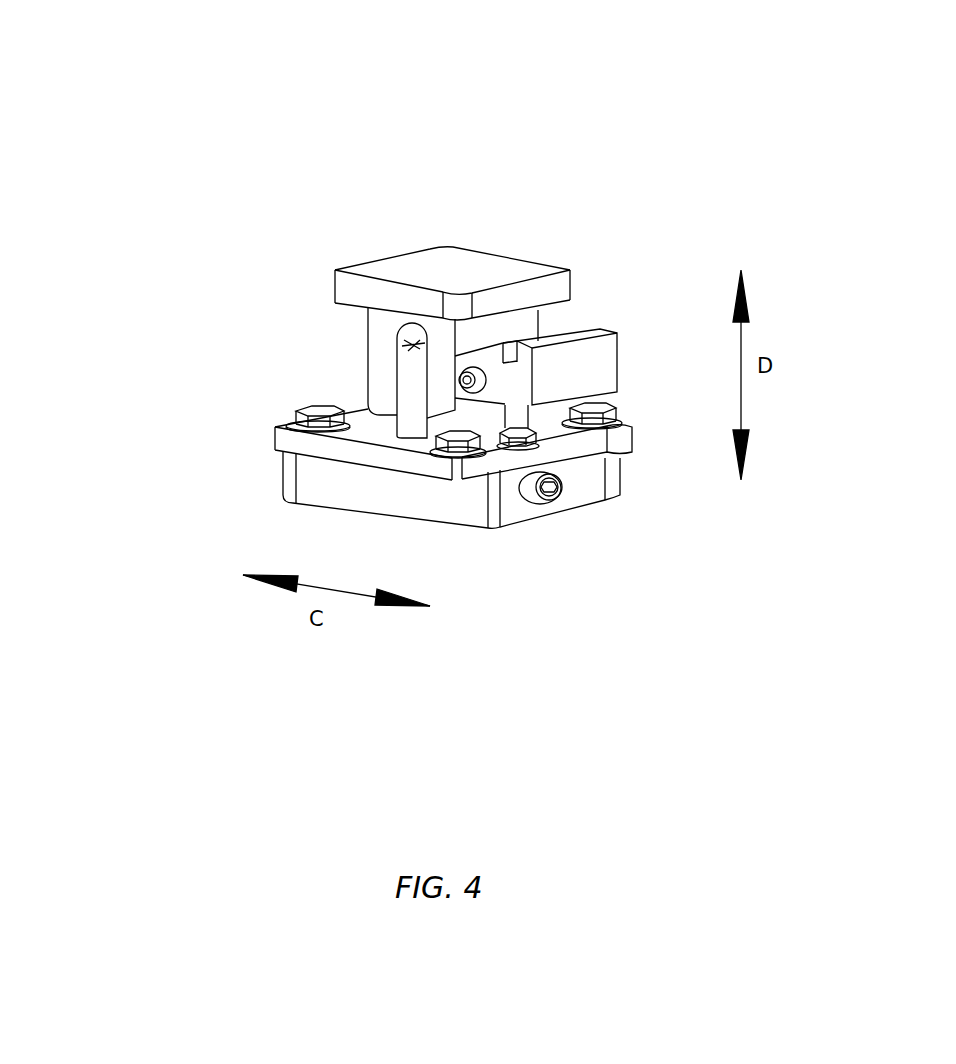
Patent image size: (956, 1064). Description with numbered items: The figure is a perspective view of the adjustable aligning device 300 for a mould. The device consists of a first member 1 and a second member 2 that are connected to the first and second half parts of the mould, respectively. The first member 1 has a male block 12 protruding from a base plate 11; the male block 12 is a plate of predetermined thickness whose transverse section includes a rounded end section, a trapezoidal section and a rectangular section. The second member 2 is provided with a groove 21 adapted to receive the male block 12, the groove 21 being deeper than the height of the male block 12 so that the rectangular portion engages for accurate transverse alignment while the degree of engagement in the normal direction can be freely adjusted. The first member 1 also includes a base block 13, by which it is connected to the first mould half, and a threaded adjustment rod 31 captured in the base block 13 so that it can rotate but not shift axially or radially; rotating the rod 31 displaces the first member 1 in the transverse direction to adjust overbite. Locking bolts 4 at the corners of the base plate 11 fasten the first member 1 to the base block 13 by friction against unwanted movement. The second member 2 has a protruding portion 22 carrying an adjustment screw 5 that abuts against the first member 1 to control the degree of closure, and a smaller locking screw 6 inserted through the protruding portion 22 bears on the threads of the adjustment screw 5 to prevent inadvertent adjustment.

The aligning device 300 is at (648, 127).
The first member 1 is at (339, 490).
The base plate 11 is at (322, 455).
The male block 12 is at (410, 413).
The base block 13 is at (387, 500).
The second member 2 is at (393, 300).
The groove 21 is at (430, 352).
The protruding portion 22 is at (577, 370).
The locking bolts 4 is at (470, 460).
The adjustment screw 5 is at (503, 432).
The locking screw 6 is at (452, 378).
The threaded adjustment rod 31 is at (545, 500).